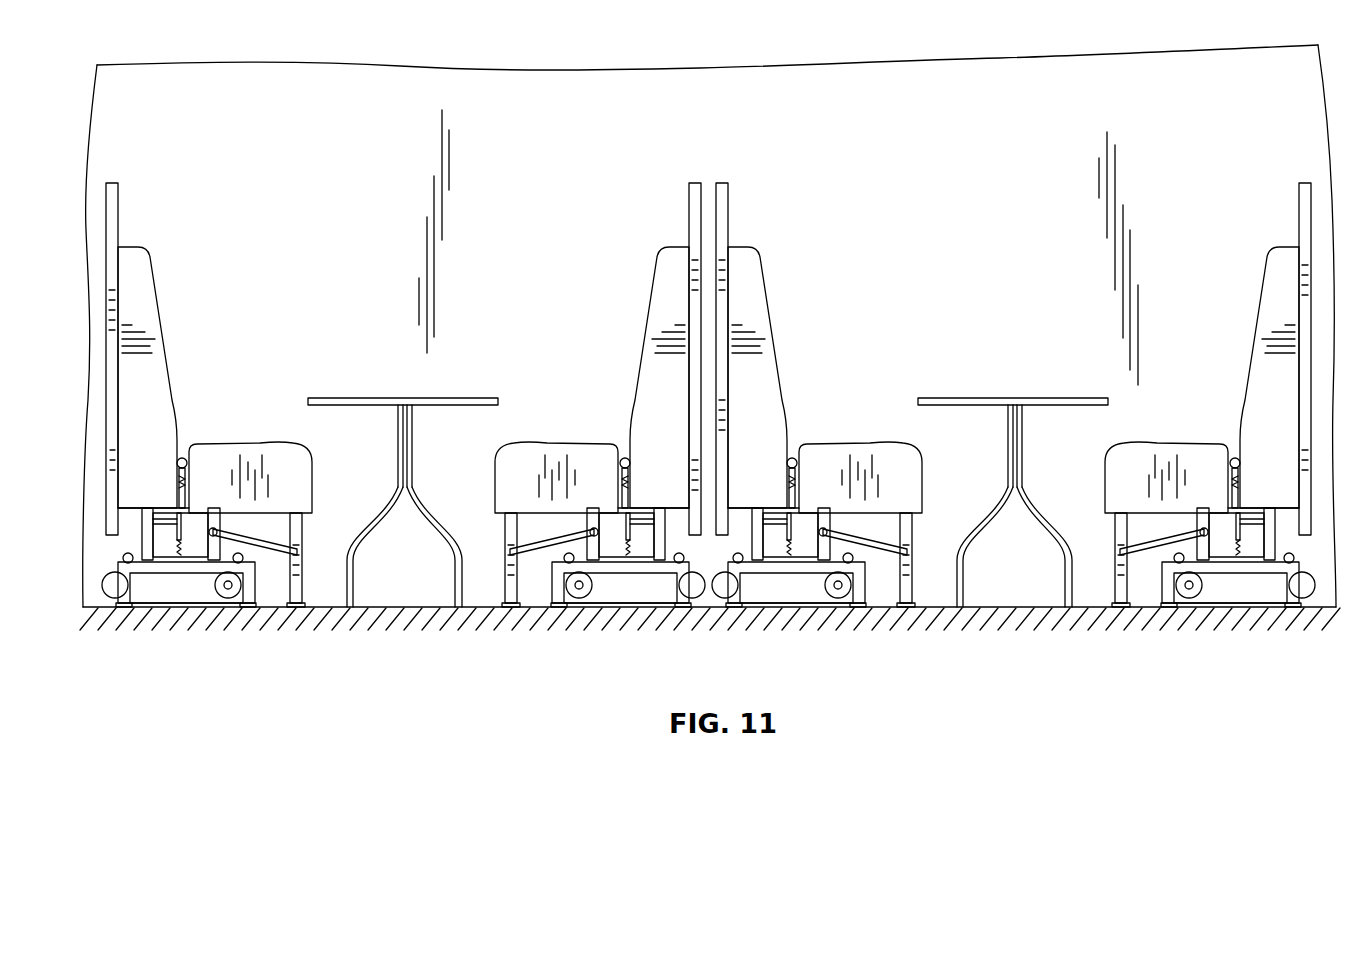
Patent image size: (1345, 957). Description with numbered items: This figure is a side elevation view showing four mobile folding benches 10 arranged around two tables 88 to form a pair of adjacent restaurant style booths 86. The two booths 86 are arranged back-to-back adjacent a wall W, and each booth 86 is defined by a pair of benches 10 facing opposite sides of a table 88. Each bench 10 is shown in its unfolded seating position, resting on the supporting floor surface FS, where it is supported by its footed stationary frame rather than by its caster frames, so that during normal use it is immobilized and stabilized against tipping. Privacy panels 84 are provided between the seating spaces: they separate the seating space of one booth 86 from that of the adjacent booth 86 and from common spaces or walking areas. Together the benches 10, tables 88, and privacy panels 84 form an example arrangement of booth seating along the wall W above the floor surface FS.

The mobile folding bench 10 is at (174, 298).
The privacy panel 84 is at (114, 190).
The booth 86 is at (376, 176).
The table 88 is at (363, 397).
The wall W is at (894, 178).
The floor surface FS is at (1002, 606).